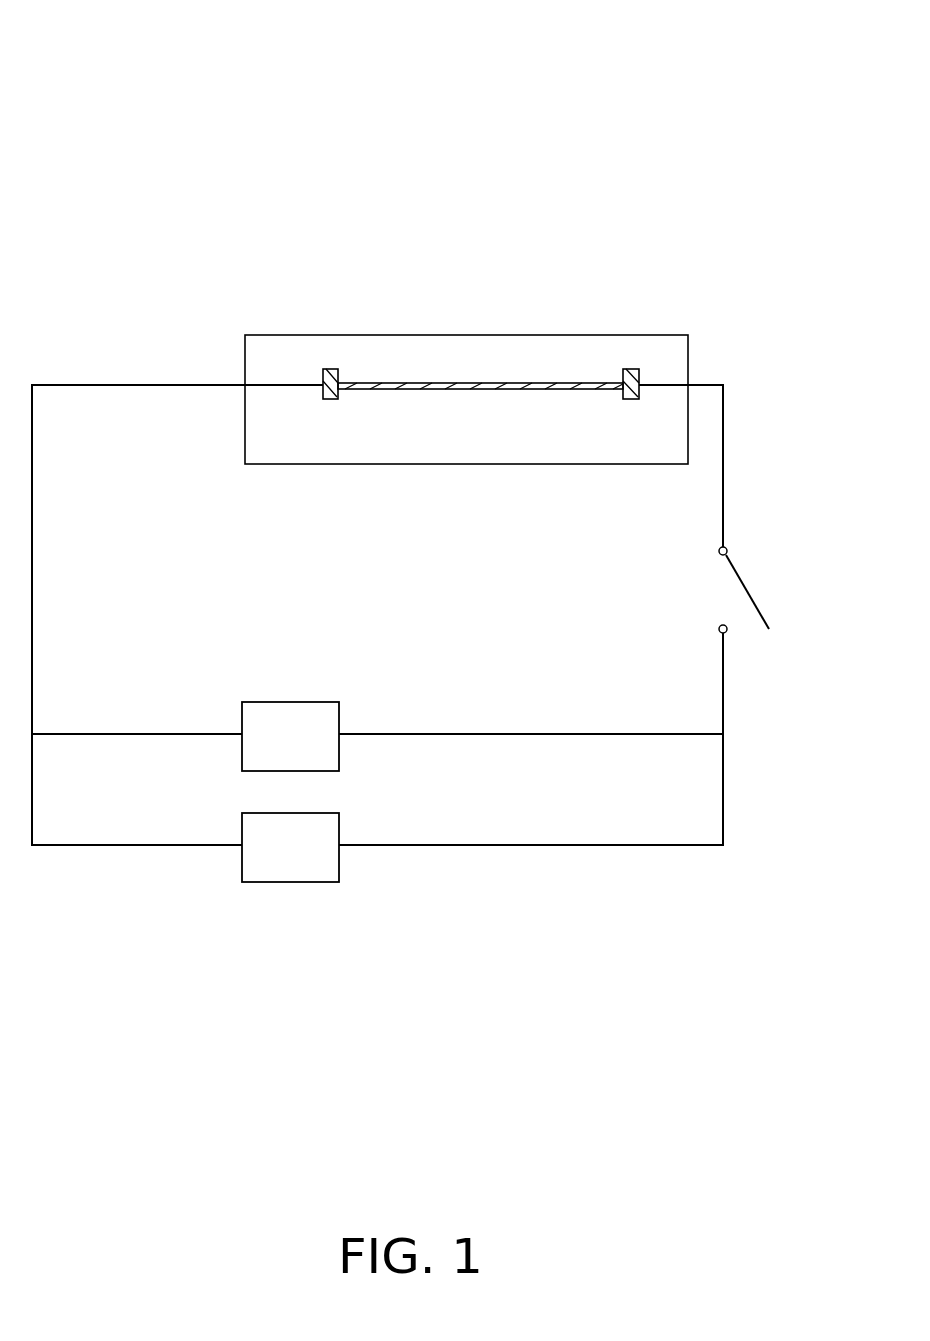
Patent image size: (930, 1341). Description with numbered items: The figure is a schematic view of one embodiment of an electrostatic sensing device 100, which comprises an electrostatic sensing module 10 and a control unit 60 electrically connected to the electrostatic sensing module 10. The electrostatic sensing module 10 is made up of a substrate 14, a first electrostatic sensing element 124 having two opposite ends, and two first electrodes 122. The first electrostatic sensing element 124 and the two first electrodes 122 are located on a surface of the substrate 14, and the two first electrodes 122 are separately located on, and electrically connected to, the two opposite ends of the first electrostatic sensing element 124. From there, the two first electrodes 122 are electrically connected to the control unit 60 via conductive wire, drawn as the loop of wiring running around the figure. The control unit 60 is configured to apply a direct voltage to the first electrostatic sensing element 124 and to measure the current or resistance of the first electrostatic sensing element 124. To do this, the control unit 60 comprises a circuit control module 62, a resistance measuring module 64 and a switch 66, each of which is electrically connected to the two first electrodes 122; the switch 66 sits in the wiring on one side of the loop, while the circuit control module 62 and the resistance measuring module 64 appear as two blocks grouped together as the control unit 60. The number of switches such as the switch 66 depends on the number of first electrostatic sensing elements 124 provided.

The electrostatic sensing device 100 is at (185, 62).
The electrostatic sensing module 10 is at (763, 293).
The substrate 14 is at (277, 348).
The first electrodes 122 is at (330, 372).
The first electrostatic sensing element 124 is at (436, 387).
The switch 66 is at (748, 585).
The control unit 60 is at (447, 963).
The circuit control module 62 is at (328, 743).
The resistance measuring module 64 is at (302, 855).